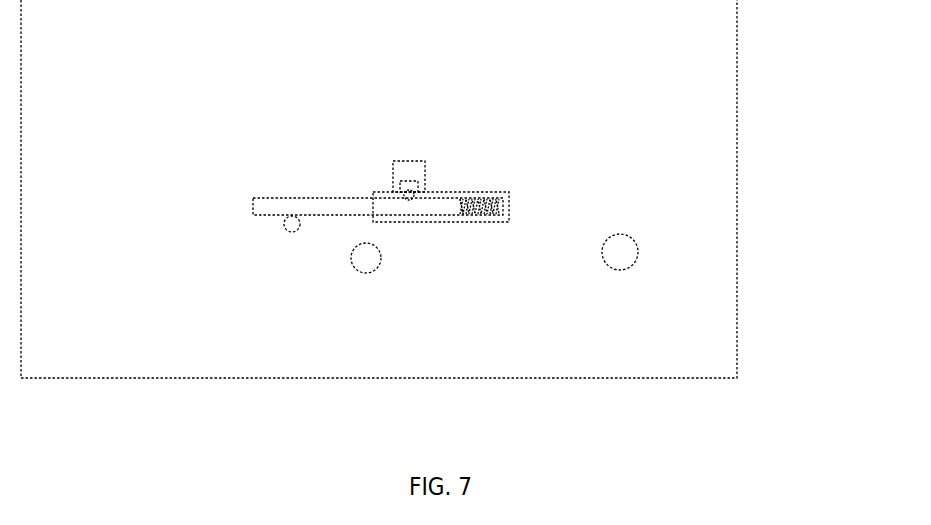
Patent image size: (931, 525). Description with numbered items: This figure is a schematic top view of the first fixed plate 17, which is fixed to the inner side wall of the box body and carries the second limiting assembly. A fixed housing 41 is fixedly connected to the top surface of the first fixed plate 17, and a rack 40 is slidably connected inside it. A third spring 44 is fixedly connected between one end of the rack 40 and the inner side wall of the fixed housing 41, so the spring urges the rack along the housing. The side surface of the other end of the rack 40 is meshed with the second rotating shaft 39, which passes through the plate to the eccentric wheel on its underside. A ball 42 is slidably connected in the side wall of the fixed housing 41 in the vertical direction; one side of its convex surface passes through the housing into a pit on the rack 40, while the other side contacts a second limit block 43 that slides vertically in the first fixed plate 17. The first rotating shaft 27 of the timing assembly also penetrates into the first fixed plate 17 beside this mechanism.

The first fixed plate 17 is at (697, 165).
The first rotating shaft 27 is at (620, 252).
The second rotating shaft 39 is at (292, 226).
The rack 40 is at (337, 216).
The fixed housing 41 is at (388, 222).
The ball 42 is at (409, 197).
The second limit block 43 is at (417, 195).
The third spring 44 is at (498, 213).